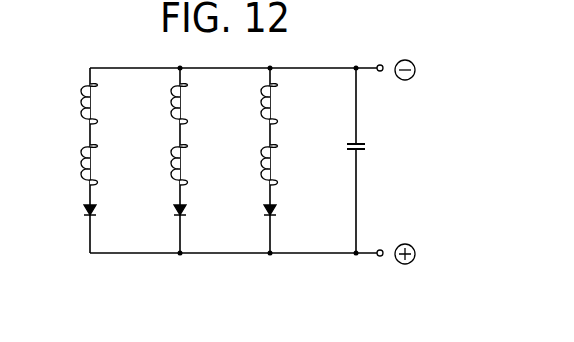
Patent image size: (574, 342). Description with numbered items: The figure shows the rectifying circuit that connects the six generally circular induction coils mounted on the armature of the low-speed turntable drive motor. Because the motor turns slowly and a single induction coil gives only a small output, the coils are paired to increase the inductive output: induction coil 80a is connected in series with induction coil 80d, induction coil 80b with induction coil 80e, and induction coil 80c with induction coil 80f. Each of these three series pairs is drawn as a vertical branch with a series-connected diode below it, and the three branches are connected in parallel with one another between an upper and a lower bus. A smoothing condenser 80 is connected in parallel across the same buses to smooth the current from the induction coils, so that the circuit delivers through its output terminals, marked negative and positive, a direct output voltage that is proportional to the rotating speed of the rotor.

The smoothing condenser 80 is at (366, 148).
The induction coil 80a is at (95, 101).
The induction coil 80b is at (185, 101).
The induction coil 80c is at (275, 99).
The induction coil 80d is at (95, 161).
The induction coil 80e is at (185, 161).
The induction coil 80f is at (275, 160).